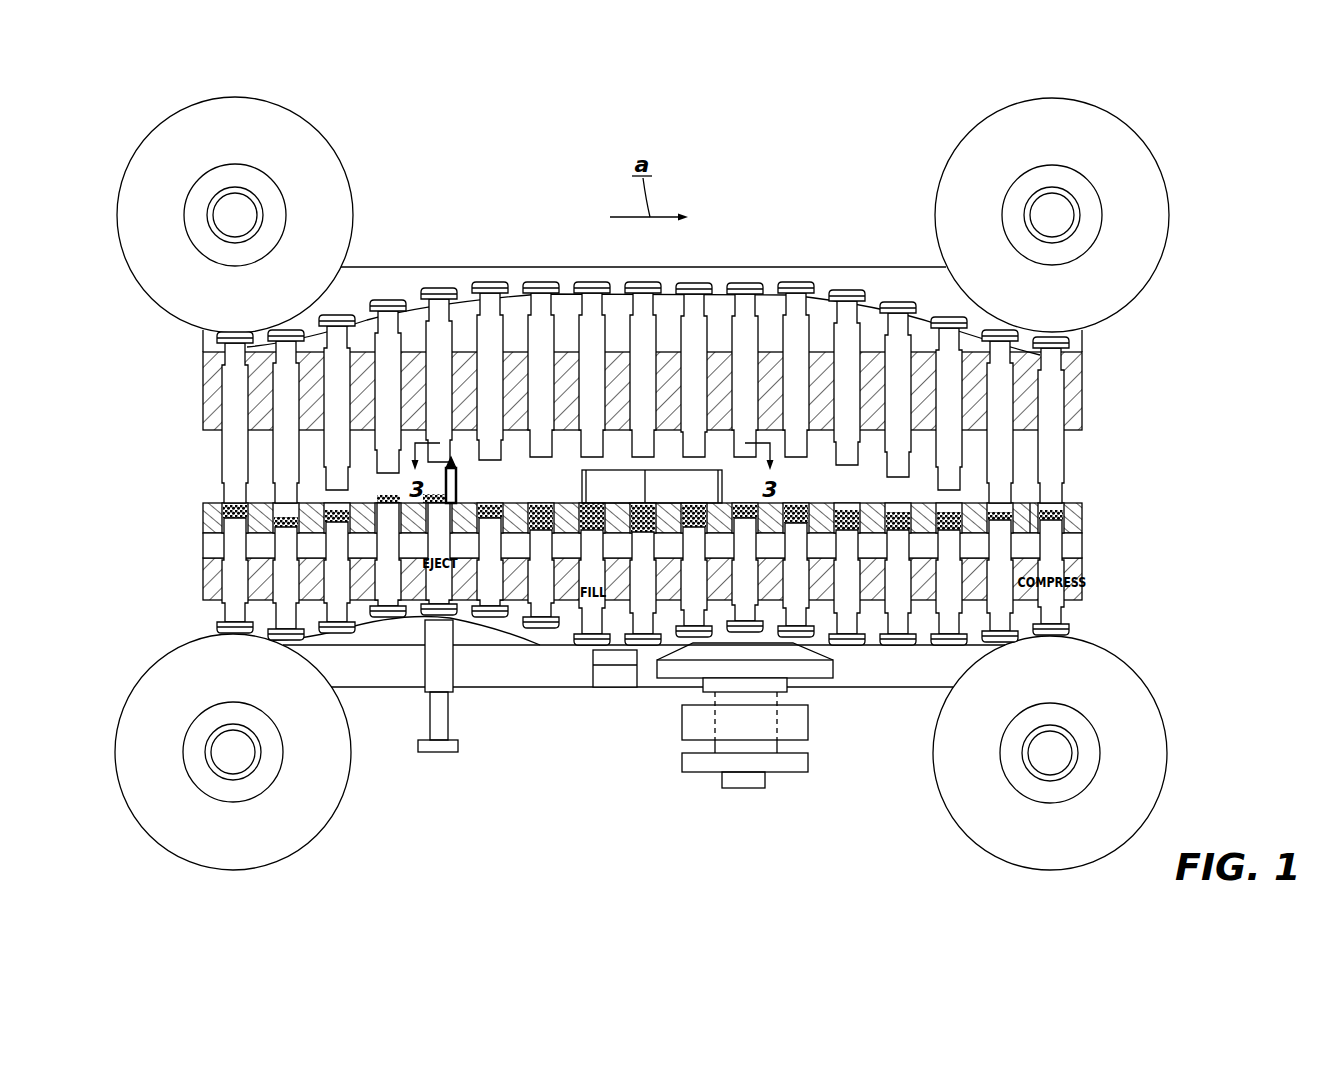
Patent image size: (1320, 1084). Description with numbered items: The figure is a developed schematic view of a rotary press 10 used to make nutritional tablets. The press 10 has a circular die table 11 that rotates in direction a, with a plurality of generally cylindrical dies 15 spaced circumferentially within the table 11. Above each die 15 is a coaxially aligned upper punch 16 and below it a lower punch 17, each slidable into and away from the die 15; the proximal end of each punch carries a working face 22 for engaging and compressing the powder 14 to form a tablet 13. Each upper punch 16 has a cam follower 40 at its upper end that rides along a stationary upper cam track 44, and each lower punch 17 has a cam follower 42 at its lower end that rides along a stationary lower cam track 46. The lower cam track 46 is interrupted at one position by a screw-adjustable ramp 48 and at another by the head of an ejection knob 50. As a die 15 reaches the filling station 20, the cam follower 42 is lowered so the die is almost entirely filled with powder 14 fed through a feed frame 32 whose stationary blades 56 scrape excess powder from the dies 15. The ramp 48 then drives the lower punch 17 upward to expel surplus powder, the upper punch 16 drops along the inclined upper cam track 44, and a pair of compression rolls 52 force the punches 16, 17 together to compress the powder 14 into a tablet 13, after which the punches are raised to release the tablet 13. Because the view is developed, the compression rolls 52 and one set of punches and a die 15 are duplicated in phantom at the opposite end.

The press 10 is at (757, 238).
The die table 11 is at (1082, 546).
The tablet 13 is at (387, 496).
The powder 14 is at (594, 520).
The die 15 is at (1082, 520).
The upper punch 16 is at (687, 373).
The lower punch 17 is at (687, 588).
The filling station 20 is at (567, 617).
The working face 22 is at (898, 477).
The feed frame 32 is at (473, 501).
The cam follower 40 is at (440, 287).
The cam follower 42 is at (490, 622).
The upper cam track 44 is at (415, 310).
The lower cam track 46 is at (368, 626).
The ramp 48 is at (810, 665).
The ejection knob 50 is at (440, 664).
The compression rolls 52 is at (1039, 152).
The stationary blades 56 is at (582, 483).